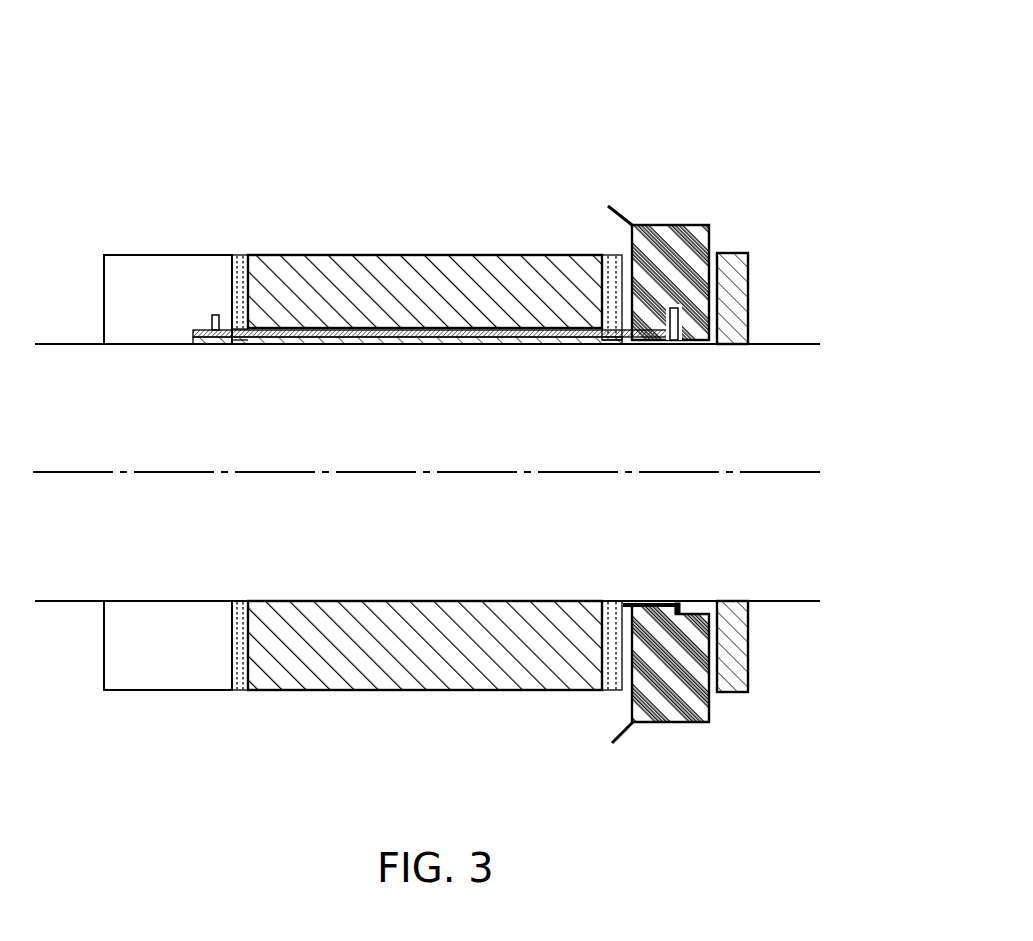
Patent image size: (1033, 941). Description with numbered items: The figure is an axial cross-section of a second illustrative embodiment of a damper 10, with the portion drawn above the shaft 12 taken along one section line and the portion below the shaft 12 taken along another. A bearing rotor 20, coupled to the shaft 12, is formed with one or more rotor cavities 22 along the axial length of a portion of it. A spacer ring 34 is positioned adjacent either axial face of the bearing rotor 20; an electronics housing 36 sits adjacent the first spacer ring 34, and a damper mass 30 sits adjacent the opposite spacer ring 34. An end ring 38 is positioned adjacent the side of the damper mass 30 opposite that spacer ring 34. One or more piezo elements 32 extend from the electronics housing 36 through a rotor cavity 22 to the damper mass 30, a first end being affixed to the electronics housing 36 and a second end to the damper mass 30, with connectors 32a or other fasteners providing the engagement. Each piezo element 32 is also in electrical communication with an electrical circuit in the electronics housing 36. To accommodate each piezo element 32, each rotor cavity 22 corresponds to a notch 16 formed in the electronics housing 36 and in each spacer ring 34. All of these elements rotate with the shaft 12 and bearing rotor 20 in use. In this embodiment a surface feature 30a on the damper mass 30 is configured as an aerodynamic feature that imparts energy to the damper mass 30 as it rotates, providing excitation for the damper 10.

The damper 10 is at (548, 138).
The shaft 12 is at (352, 461).
The notch 16 is at (232, 343).
The bearing rotor 20 is at (455, 255).
The rotor cavity 22 is at (520, 340).
The damper mass 30 is at (648, 226).
The surface feature 30a is at (620, 206).
The piezo element 32 is at (445, 337).
The connector 32a is at (208, 312).
The spacer ring 34 is at (243, 255).
The electronics housing 36 is at (161, 296).
The end ring 38 is at (746, 280).